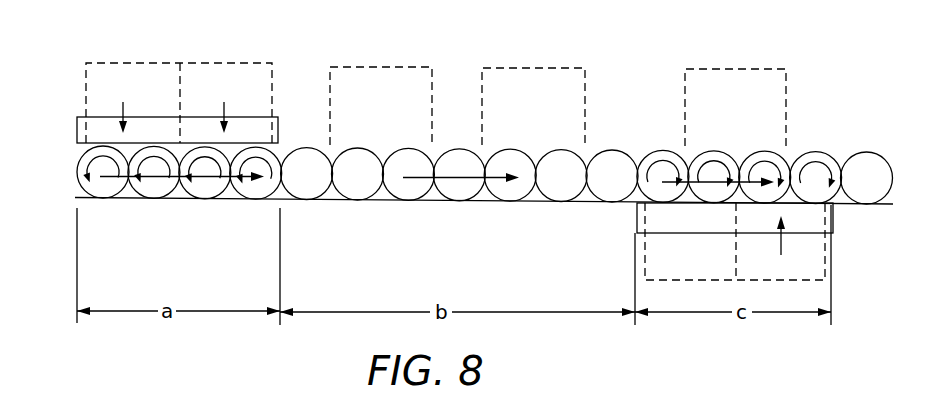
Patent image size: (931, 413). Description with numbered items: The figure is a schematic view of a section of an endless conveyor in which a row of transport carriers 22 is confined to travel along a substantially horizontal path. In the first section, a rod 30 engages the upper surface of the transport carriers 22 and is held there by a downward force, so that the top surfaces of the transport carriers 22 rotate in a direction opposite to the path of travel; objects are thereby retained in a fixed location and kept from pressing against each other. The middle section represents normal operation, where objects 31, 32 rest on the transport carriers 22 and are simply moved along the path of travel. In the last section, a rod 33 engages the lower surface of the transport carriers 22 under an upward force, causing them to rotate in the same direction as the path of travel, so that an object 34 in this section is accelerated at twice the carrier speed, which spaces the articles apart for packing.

The transport carriers 22 is at (305, 183).
The rod 30 is at (252, 123).
The object 31 is at (508, 78).
The object 32 is at (367, 85).
The rod 33 is at (810, 222).
The object 34 is at (709, 83).